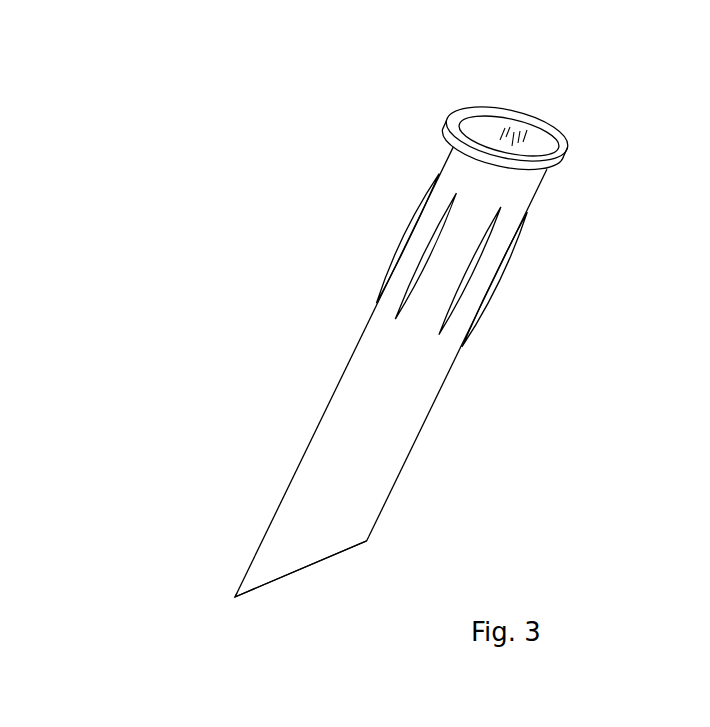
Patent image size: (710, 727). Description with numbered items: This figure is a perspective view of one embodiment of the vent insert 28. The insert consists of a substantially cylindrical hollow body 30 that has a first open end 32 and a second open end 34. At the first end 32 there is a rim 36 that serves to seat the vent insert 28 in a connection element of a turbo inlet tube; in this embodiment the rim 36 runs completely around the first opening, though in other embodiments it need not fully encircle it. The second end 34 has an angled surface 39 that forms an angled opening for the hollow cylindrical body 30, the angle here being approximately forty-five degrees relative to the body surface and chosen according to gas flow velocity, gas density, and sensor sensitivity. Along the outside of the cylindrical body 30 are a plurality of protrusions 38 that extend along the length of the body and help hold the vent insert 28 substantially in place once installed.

The vent insert 28 is at (390, 321).
The hollow body 30 is at (366, 372).
The first open end 32 is at (503, 108).
The second open end 34 is at (192, 554).
The rim 36 is at (582, 149).
The protrusions 38 is at (535, 232).
The angled surface 39 is at (355, 564).